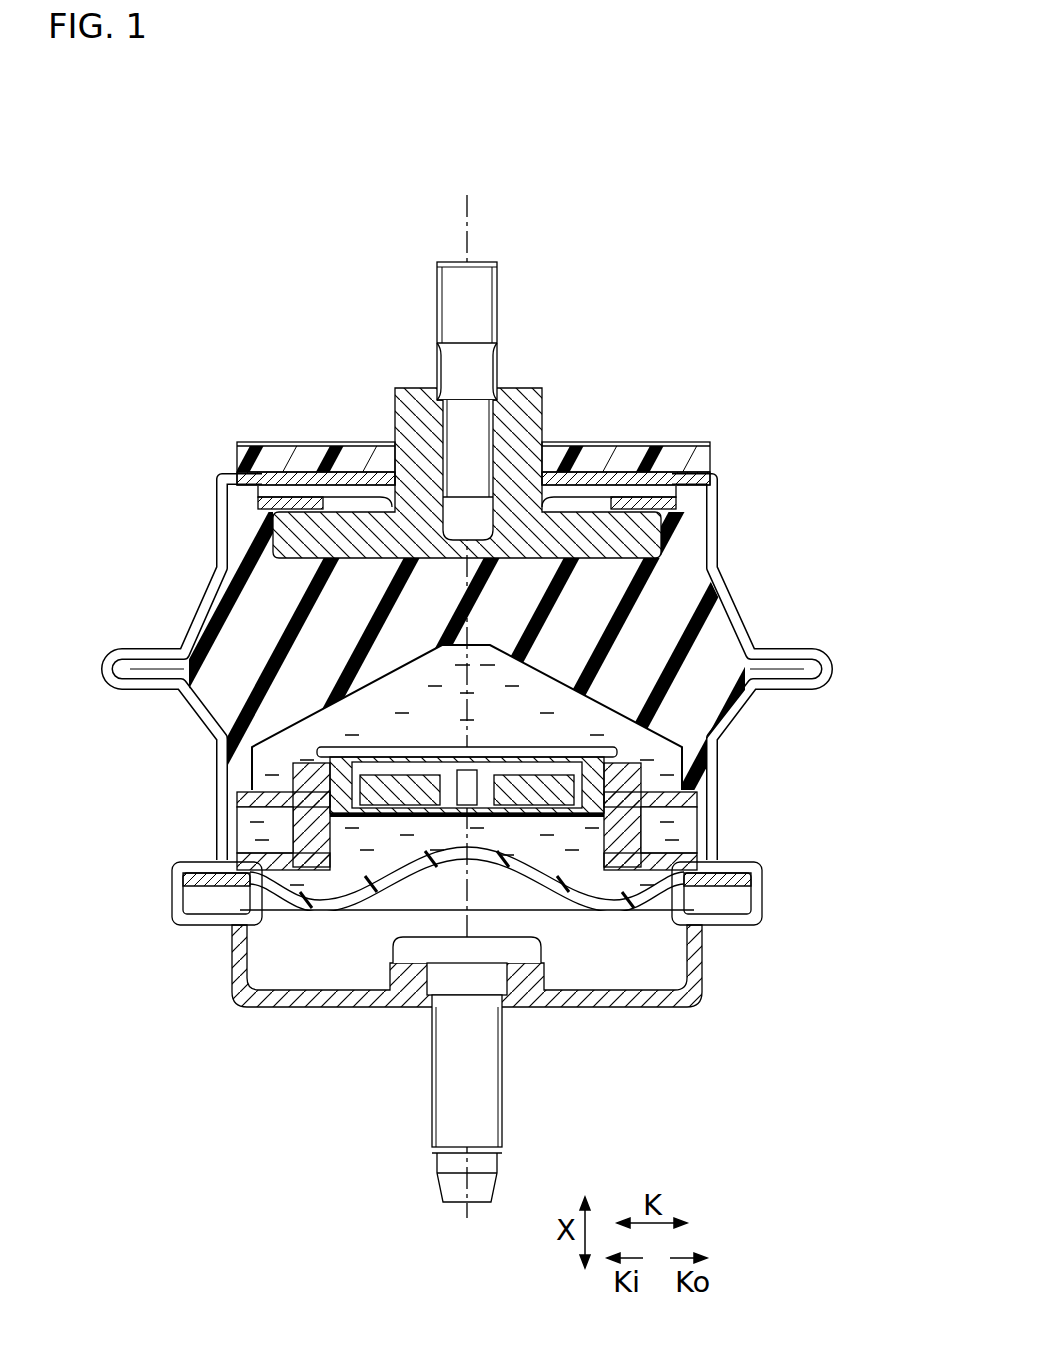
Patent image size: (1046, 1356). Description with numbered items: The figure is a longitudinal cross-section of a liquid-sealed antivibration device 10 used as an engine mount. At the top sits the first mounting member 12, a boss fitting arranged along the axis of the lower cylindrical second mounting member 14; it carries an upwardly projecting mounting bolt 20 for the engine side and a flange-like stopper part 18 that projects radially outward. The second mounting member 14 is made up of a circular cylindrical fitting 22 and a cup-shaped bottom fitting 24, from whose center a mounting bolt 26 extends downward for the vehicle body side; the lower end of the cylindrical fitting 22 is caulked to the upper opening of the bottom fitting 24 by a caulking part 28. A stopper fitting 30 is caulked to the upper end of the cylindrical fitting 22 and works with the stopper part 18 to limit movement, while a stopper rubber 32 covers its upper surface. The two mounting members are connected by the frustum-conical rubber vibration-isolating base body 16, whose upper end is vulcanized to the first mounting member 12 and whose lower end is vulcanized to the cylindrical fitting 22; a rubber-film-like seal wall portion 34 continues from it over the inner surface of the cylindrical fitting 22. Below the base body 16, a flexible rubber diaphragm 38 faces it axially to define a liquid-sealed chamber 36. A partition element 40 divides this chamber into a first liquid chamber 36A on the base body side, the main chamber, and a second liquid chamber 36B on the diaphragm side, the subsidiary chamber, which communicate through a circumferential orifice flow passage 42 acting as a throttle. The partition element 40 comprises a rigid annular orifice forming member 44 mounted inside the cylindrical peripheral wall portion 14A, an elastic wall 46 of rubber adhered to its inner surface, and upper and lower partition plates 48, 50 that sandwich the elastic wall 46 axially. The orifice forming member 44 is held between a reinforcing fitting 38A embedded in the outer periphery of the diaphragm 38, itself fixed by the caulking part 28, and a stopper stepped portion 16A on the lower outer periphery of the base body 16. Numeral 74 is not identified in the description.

The liquid-sealed antivibration device 10 is at (482, 155).
The first mounting member 12 is at (525, 395).
The second mounting member 14 is at (713, 760).
The peripheral wall portion 14A is at (715, 795).
The vibration-isolating base body 16 is at (672, 597).
The stopper stepped portion 16A is at (240, 780).
The stopper part 18 is at (680, 525).
The mounting bolt 20 is at (497, 300).
The cylindrical fitting 22 is at (213, 742).
The bottom fitting 24 is at (255, 1008).
The mounting bolt 26 is at (505, 1115).
The caulking part 28 is at (763, 910).
The stopper fitting 30 is at (217, 507).
The stopper rubber 32 is at (290, 442).
The seal wall portion 34 is at (703, 830).
The liquid-sealed chamber 36 is at (406, 819).
The first liquid chamber 36A is at (385, 695).
The second liquid chamber 36B is at (343, 855).
The diaphragm 38 is at (603, 910).
The reinforcing fitting 38A is at (215, 925).
The partition element 40 is at (477, 718).
The orifice flow passage 42 is at (255, 825).
The orifice forming member 44 is at (690, 742).
The elastic wall 46 is at (522, 780).
The upper partition plate 48 is at (437, 755).
The lower partition plate 50 is at (467, 880).
The movable membrane 74 is at (373, 820).